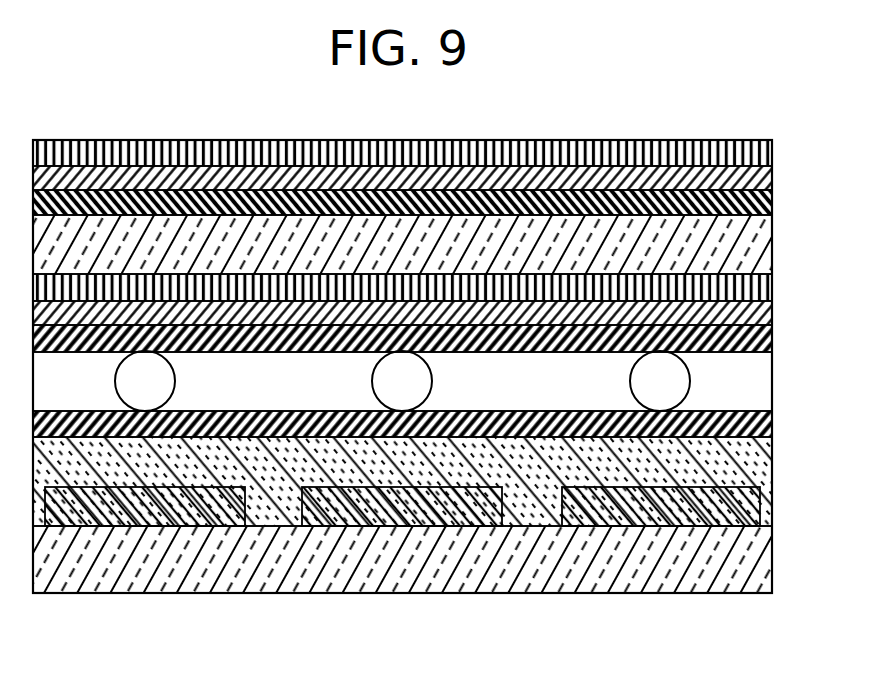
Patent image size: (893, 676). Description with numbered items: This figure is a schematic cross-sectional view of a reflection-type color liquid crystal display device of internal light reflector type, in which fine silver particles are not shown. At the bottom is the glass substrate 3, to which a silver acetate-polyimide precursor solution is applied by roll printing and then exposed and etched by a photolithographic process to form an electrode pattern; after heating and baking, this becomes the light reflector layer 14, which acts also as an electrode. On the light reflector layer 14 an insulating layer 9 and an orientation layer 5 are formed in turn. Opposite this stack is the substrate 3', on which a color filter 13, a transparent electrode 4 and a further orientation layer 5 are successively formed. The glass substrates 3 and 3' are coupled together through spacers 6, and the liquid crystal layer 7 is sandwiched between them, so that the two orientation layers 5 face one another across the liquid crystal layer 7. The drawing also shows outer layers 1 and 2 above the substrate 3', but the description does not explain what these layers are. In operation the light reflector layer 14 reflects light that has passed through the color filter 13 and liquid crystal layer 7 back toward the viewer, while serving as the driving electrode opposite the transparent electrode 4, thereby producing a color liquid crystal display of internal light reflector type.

The transparent electrode film (top) 1 is at (772, 151).
The polarizing / optical film layers 2 is at (772, 178).
The substrate 3' is at (436, 244).
The color filter 13 is at (770, 274).
The transparent electrode 4 is at (772, 307).
The orientation layer 5 is at (772, 337).
The spacers 6 is at (678, 376).
The liquid crystal layer 7 is at (757, 392).
The insulating layer 9 is at (763, 467).
The light reflector layer 14 is at (135, 526).
The glass substrate 3 is at (414, 588).